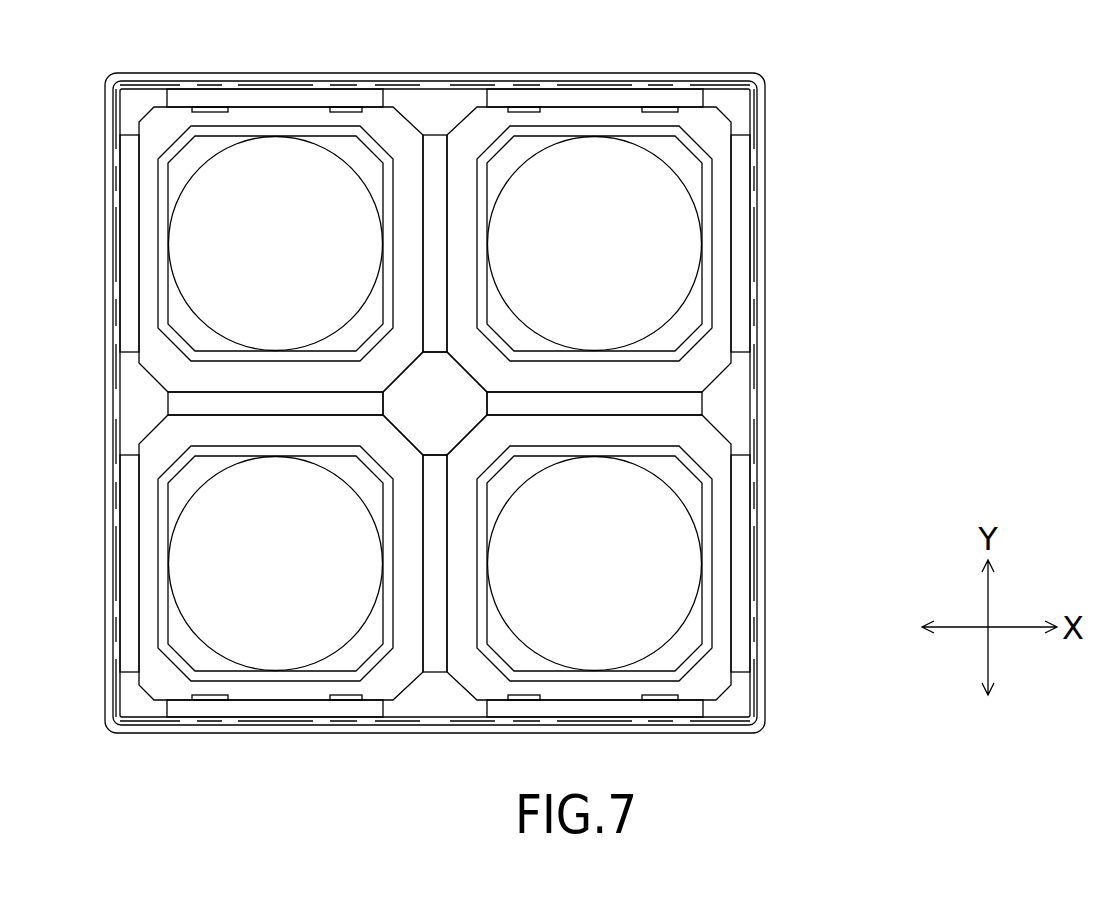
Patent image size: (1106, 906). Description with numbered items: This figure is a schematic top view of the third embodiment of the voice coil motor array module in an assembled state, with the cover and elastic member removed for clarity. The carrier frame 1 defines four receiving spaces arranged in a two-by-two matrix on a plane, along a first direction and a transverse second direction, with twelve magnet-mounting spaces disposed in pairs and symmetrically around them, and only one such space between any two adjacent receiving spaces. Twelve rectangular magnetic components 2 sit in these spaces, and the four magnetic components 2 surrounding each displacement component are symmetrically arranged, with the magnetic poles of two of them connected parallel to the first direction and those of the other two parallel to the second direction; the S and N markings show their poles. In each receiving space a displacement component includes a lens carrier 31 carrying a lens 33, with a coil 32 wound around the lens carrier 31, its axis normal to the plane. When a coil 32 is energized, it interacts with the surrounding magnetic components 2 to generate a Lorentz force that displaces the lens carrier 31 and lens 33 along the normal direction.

The carrier frame 1 is at (740, 106).
The magnetic component 2 is at (432, 158).
The lens carrier 31 is at (207, 145).
The coil 32 is at (331, 128).
The lens 33 is at (286, 173).